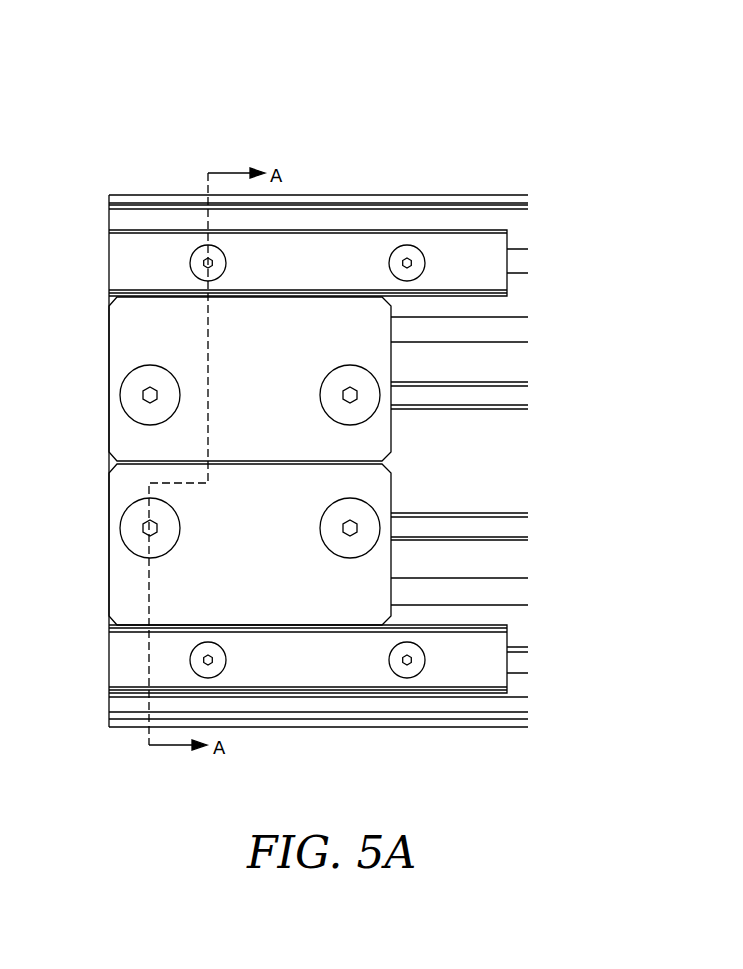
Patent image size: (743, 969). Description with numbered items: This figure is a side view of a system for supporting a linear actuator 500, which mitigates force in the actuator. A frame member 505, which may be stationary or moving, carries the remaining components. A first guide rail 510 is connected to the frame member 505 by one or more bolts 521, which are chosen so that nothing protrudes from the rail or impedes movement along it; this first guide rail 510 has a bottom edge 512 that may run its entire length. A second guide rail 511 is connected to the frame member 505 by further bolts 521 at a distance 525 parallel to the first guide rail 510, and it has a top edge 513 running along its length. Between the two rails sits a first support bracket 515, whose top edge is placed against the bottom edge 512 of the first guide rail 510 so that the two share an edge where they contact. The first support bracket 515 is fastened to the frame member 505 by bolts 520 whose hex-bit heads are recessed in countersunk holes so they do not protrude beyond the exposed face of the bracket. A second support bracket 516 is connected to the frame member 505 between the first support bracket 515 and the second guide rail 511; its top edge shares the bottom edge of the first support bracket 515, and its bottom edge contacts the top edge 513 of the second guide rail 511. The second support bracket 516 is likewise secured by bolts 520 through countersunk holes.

The system for supporting a linear actuator 500 is at (287, 132).
The frame member 505 is at (397, 195).
The first guide rail 510 is at (127, 263).
The second guide rail 511 is at (125, 655).
The bottom edge 512 is at (500, 273).
The top edge 513 is at (478, 627).
The first support bracket 515 is at (349, 427).
The second support bracket 516 is at (350, 544).
The bolts 520 is at (323, 406).
The bolts 521 is at (228, 662).
The distance 525 is at (396, 462).